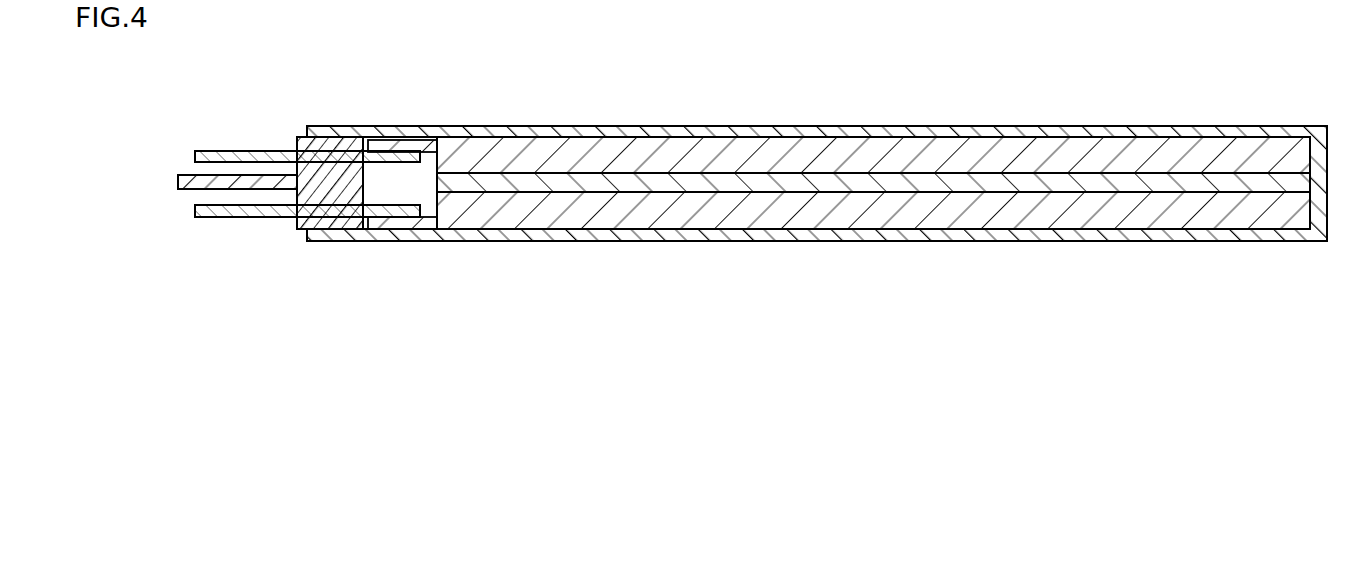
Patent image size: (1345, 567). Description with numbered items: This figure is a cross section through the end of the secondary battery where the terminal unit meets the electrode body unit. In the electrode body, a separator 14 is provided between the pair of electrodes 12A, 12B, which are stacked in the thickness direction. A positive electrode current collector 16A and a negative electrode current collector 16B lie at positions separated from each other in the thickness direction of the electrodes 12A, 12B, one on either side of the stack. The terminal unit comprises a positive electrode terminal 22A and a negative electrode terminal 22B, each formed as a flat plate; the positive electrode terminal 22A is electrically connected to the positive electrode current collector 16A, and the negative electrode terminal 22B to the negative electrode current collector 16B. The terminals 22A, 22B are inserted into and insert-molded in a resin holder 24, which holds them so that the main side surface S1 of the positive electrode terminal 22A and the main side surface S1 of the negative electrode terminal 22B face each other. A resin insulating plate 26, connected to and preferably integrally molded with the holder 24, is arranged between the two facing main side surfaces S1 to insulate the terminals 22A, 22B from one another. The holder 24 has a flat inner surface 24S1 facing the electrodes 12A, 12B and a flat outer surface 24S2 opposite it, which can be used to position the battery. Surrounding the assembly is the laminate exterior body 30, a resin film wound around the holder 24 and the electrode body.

The main side surface S1 is at (190, 166).
The insulating plate 26 is at (238, 174).
The negative electrode terminal 22B is at (278, 151).
The holder 24 is at (327, 143).
The inner surface 24S1 is at (365, 178).
The outer surface 24S2 is at (297, 222).
The negative electrode current collector 16B is at (417, 146).
The electrode 12B is at (578, 150).
The separator 14 is at (750, 182).
The laminate exterior body 30 is at (898, 132).
The positive electrode terminal 22A is at (248, 218).
The positive electrode current collector 16A is at (398, 223).
The electrode 12A is at (580, 216).